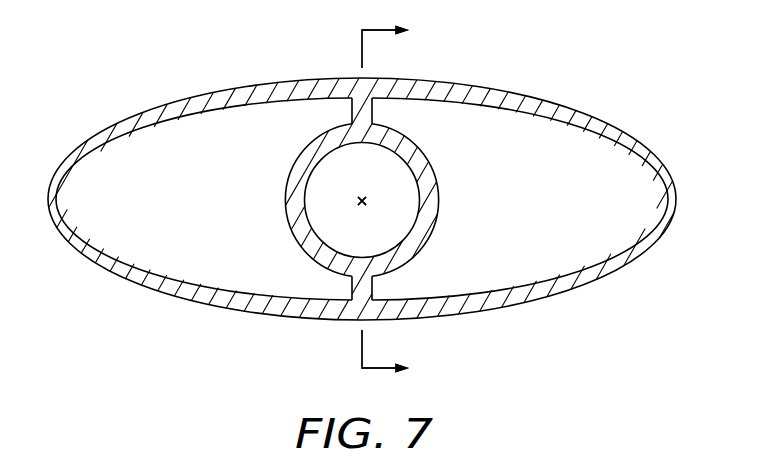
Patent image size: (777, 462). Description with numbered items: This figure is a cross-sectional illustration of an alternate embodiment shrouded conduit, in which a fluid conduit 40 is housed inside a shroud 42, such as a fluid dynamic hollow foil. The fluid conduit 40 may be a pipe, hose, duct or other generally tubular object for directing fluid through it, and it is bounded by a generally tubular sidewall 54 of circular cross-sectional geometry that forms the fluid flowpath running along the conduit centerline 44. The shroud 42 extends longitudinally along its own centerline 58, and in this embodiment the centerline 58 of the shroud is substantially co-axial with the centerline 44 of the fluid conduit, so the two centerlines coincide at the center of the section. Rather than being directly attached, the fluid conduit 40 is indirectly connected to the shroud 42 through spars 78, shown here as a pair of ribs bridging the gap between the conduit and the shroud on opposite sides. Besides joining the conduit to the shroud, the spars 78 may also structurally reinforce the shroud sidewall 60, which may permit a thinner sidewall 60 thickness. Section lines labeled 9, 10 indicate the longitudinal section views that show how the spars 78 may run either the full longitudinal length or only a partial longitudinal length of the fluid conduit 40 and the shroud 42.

The shroud 42 is at (572, 107).
The shroud sidewall 60 is at (562, 285).
The spars 78 is at (357, 110).
The fluid conduit 40 is at (443, 200).
The sidewall 54 is at (413, 247).
The centerline 44 is at (357, 202).
The centerline 58 is at (357, 202).
The section line FIG. 9 is at (411, 202).
The section line FIG. 10 is at (411, 202).